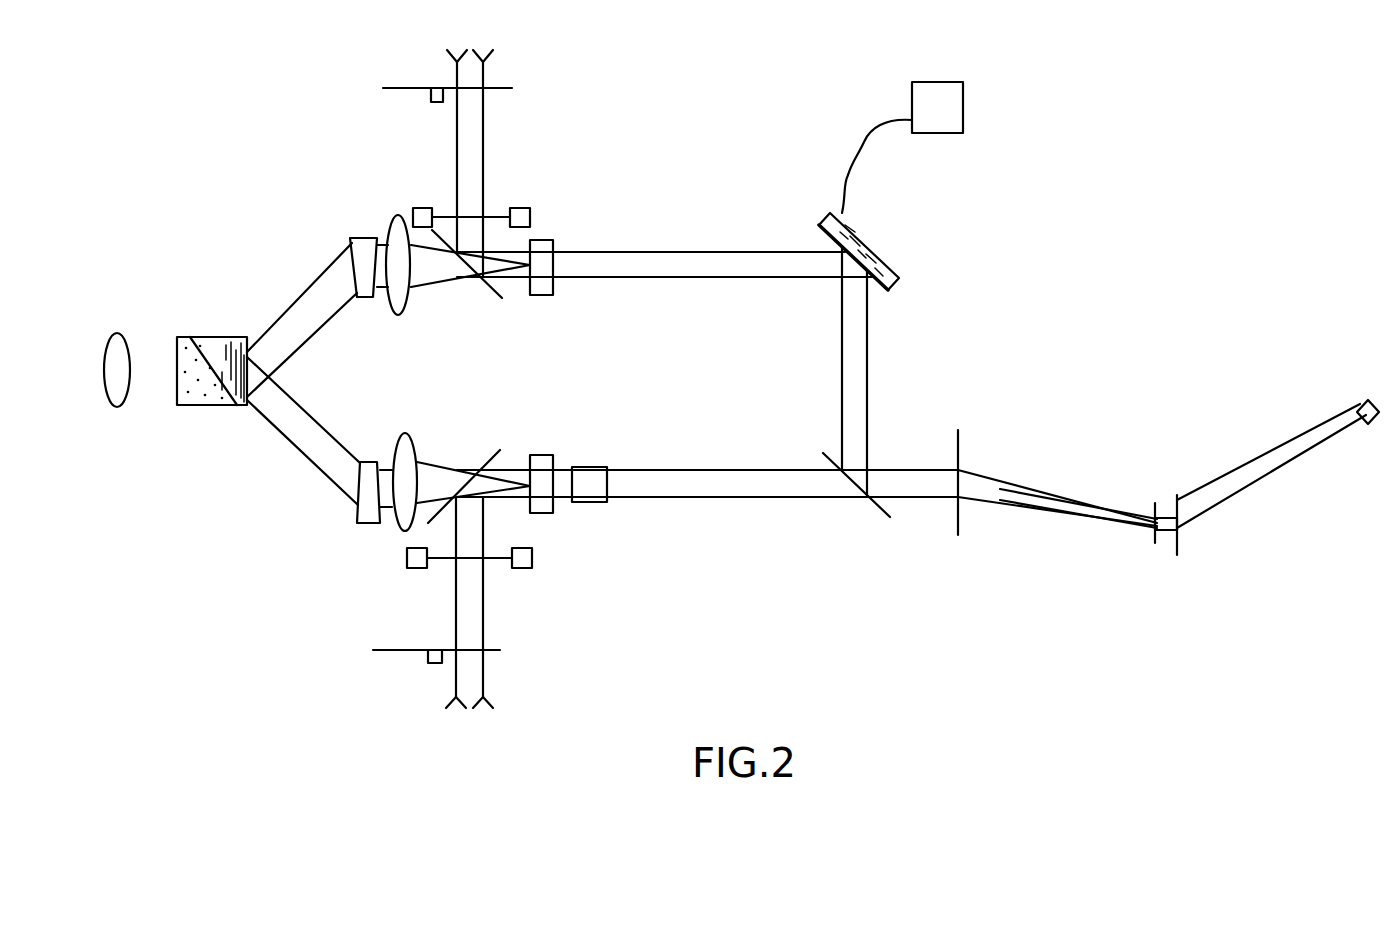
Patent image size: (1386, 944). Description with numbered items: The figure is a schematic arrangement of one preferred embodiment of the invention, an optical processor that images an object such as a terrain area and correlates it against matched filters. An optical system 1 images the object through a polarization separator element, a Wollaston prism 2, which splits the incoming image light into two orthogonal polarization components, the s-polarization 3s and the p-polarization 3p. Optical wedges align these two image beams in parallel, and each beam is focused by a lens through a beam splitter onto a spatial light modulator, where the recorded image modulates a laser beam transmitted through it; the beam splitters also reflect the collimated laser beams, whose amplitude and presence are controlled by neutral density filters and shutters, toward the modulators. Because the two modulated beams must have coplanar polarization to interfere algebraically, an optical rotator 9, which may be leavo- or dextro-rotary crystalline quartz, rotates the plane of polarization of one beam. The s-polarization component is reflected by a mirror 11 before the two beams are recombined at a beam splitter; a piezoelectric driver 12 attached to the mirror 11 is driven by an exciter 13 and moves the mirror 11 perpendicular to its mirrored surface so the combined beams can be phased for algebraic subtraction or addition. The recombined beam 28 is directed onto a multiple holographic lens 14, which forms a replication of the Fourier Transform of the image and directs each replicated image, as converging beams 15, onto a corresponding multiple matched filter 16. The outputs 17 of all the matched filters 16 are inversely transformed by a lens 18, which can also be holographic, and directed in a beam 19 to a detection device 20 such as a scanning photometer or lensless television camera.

The optical system 1 is at (122, 335).
The Wollaston prism 2 is at (192, 407).
The s-polarization 3s is at (283, 313).
The p-polarization 3p is at (305, 462).
The optical rotator 9 is at (590, 502).
The mirror 11 is at (820, 226).
The piezoelectric driver 12 is at (868, 238).
The exciter 13 is at (963, 112).
The multiple holographic lens 14 is at (957, 523).
The converging beams 15 is at (1057, 493).
The multiple matched filter 16 is at (1150, 536).
The outputs 17 is at (1167, 517).
The lens 18 is at (1180, 545).
The beam 19 is at (1258, 485).
The detection device 20 is at (1364, 400).
The recombined beam 28 is at (922, 468).